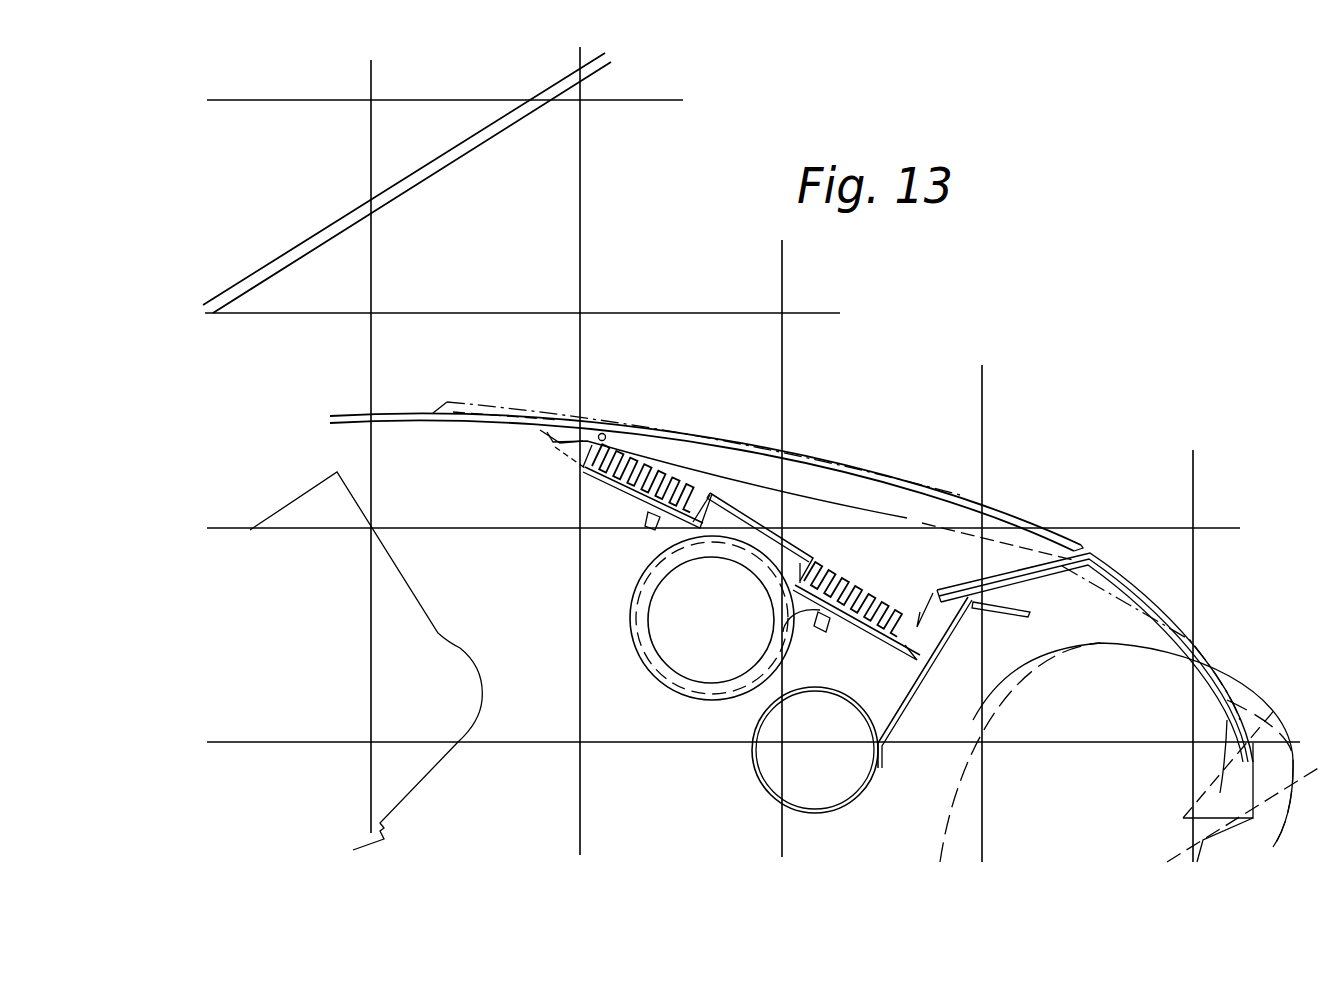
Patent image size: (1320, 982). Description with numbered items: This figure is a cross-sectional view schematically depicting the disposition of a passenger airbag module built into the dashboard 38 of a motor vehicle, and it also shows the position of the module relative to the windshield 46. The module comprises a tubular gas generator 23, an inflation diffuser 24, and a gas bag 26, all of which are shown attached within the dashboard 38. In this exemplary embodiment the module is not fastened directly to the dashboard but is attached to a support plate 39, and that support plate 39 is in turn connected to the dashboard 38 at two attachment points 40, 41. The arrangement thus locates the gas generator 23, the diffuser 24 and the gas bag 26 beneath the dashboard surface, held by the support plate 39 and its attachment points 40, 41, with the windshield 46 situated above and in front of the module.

The windshield 46 is at (397, 187).
The attachment point 40 is at (603, 433).
The inflation diffuser 24 is at (783, 543).
The gas bag 26 is at (887, 587).
The dashboard 38 is at (950, 477).
The attachment point 41 is at (975, 588).
The tubular gas generator 23 is at (673, 630).
The support plate 39 is at (873, 640).